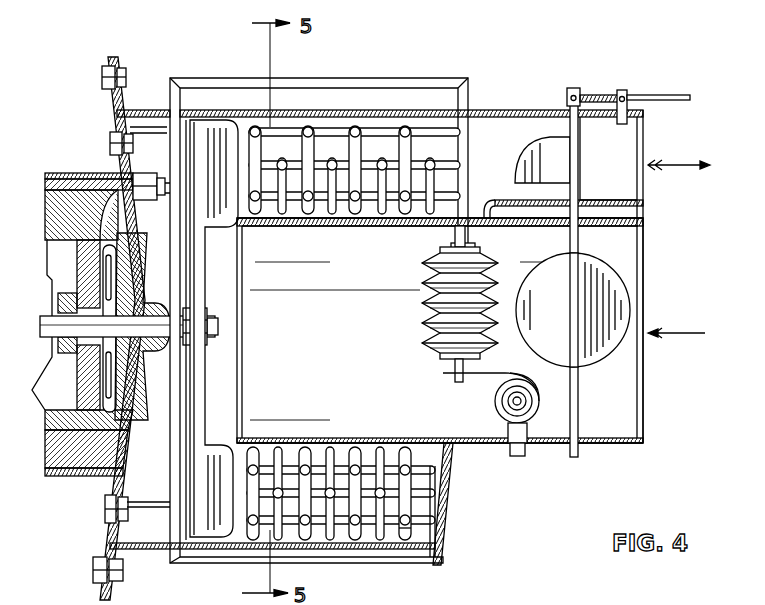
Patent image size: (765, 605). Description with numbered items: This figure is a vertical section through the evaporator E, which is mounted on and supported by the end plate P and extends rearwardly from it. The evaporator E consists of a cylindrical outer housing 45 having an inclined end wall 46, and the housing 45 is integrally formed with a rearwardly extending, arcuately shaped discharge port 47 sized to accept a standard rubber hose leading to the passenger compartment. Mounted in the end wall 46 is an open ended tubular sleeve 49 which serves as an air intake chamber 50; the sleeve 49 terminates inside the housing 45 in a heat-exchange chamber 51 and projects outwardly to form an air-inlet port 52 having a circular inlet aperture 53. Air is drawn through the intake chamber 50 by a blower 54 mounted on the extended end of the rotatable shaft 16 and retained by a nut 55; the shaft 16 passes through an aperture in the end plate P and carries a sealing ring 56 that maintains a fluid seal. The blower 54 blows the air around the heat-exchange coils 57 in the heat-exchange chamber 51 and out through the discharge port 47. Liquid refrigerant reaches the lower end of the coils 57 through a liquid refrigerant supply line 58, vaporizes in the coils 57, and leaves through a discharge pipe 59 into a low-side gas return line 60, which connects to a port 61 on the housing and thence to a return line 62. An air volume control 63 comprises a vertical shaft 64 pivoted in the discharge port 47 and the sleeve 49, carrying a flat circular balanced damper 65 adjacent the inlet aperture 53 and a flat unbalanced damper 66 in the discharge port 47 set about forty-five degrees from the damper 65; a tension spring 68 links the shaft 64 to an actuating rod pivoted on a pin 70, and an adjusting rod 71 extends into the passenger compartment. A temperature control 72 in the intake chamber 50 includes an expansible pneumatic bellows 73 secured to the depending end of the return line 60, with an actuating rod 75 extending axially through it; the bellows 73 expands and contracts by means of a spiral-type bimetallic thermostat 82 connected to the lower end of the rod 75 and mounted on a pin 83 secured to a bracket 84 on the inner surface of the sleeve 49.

The end plate P is at (133, 444).
The evaporator E is at (393, 108).
The rotatable shaft 16 is at (218, 330).
The cylindrical outer housing 45 is at (372, 550).
The inclined end wall 46 is at (452, 497).
The discharge port 47 is at (642, 137).
The tubular sleeve 49 is at (640, 430).
The air intake chamber 50 is at (597, 390).
The heat-exchange chamber 51 is at (408, 540).
The air-inlet port 52 is at (642, 240).
The circular inlet aperture 53 is at (645, 268).
The blower 54 is at (218, 532).
The nut 55 is at (200, 346).
The sealing ring 56 is at (140, 360).
The heat-exchange coils 57 is at (400, 528).
The liquid refrigerant supply line 58 is at (254, 562).
The discharge pipe 59 is at (428, 172).
The low-side gas return line 60 is at (442, 80).
The port 61 is at (145, 150).
The return line 62 is at (78, 183).
The air volume control 63 is at (615, 300).
The vertical shaft 64 is at (572, 88).
The balanced damper 65 is at (625, 311).
The unbalanced damper 66 is at (537, 153).
The tension spring 68 is at (592, 95).
The pin 70 is at (623, 90).
The adjusting rod 71 is at (662, 95).
The temperature control 72 is at (420, 343).
The pneumatic bellows 73 is at (424, 315).
The actuating rod 75 is at (450, 364).
The bimetallic thermostat 82 is at (512, 402).
The pin 83 is at (516, 404).
The bracket 84 is at (518, 456).